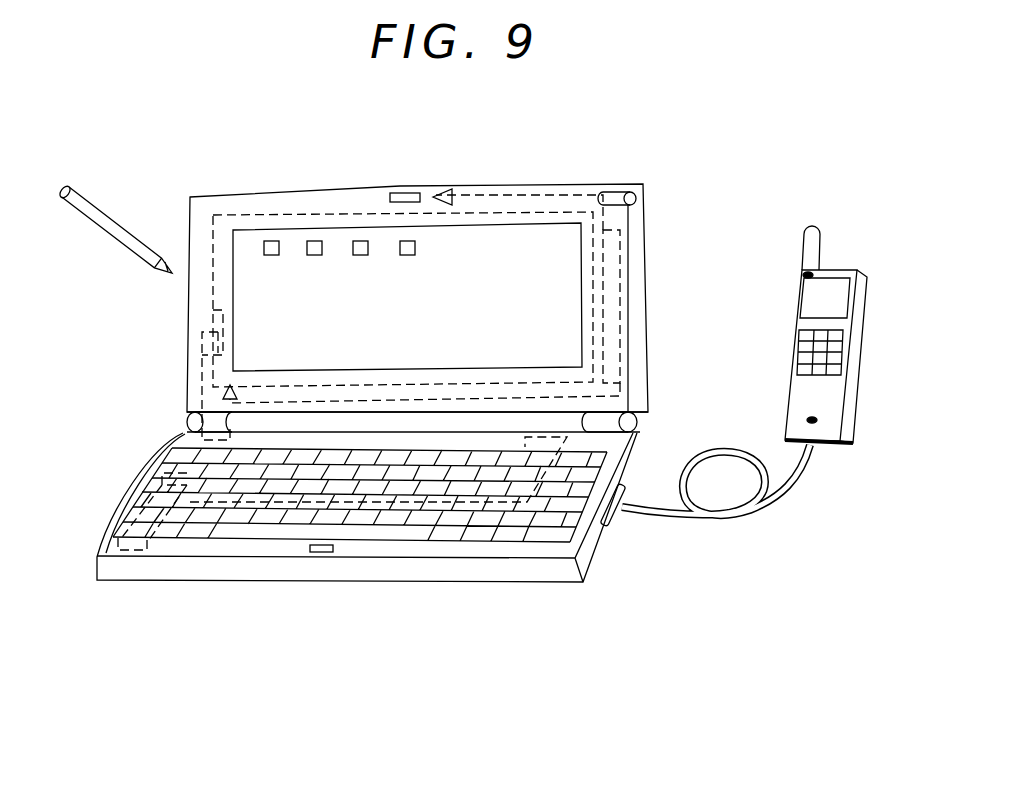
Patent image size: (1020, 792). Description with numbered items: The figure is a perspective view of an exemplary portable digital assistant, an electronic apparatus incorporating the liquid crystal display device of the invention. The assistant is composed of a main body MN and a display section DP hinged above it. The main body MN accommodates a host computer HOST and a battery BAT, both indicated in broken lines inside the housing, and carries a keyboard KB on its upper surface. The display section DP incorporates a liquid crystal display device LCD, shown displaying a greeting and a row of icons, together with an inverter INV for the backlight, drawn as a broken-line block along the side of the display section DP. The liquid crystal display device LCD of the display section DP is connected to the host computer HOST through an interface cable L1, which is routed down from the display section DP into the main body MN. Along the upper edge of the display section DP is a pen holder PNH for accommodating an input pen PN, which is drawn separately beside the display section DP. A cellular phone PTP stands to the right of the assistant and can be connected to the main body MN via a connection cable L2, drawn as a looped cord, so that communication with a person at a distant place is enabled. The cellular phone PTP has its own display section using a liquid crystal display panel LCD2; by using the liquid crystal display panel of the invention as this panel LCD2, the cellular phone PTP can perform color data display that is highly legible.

The main body MN is at (380, 568).
The liquid crystal display device LCD is at (225, 227).
The display section DP is at (357, 200).
The pen holder PNH is at (618, 194).
The inverter INV is at (613, 267).
The interface cable L1 is at (200, 363).
The host computer HOST is at (222, 443).
The input pen PN is at (92, 210).
The keyboard KB is at (243, 517).
The battery BAT is at (135, 557).
The connection cable L2 is at (782, 500).
The cellular phone PTP is at (867, 270).
The liquid crystal display panel LCD2 is at (817, 298).